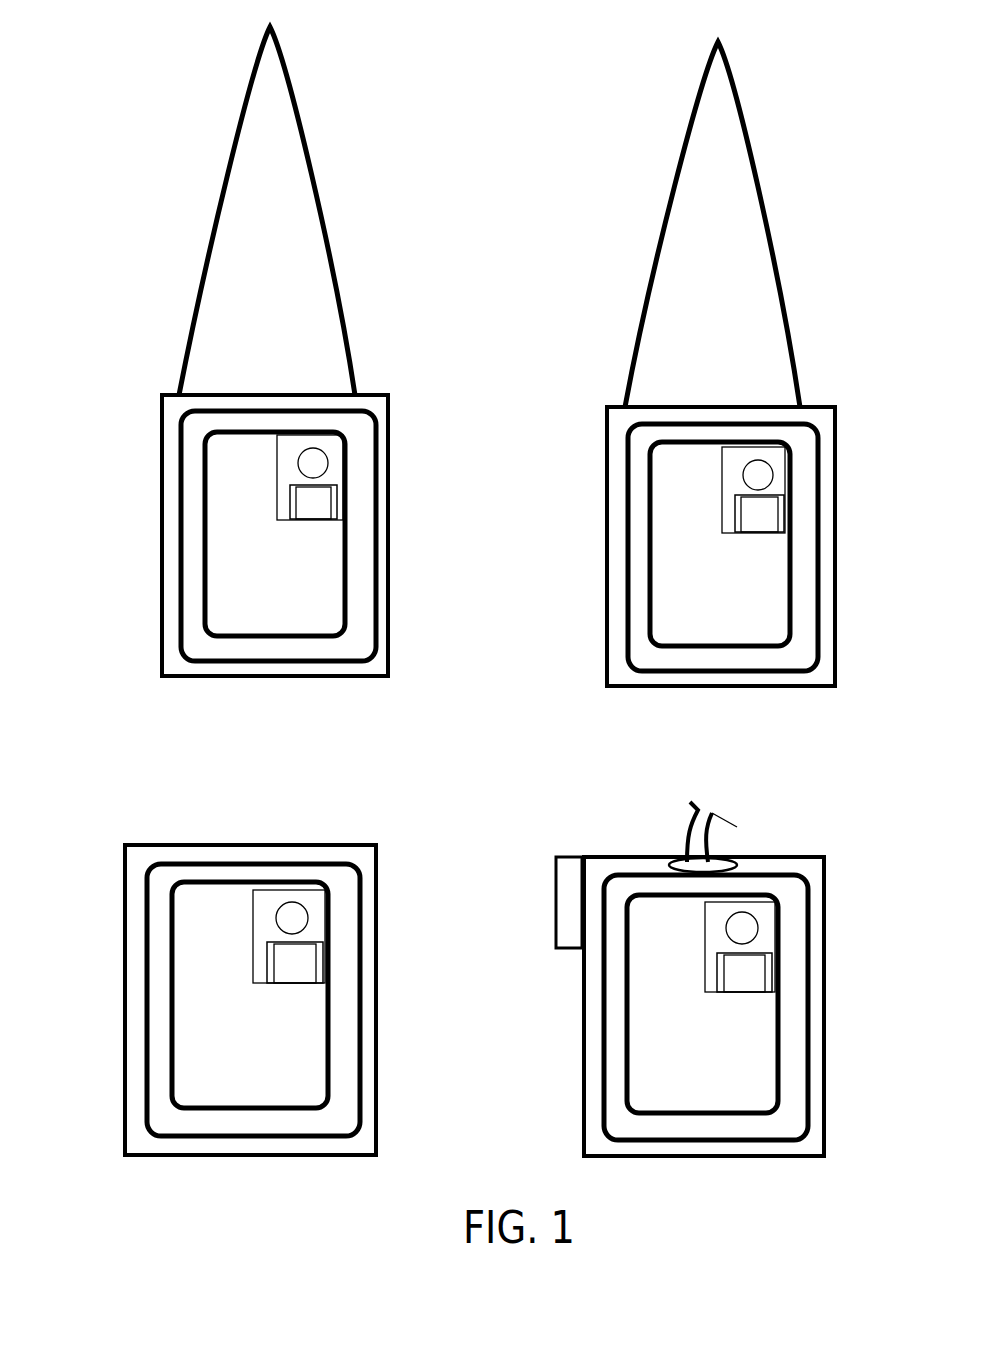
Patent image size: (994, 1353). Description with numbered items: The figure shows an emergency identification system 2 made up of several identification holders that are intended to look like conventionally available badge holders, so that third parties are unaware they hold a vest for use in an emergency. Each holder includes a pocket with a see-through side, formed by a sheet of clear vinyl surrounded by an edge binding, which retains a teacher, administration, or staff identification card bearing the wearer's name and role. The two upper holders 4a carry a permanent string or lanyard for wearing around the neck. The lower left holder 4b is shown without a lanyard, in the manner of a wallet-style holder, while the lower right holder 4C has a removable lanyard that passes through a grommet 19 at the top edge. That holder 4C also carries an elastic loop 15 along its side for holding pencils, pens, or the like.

The emergency identification system 2 is at (128, 122).
The identification holder with permanent lanyard 4a is at (377, 395).
The plain badge holder 4b is at (365, 843).
The identification holder with removable lanyard 4C is at (813, 855).
The elastic loop 15 is at (567, 880).
The grommet 19 is at (740, 853).